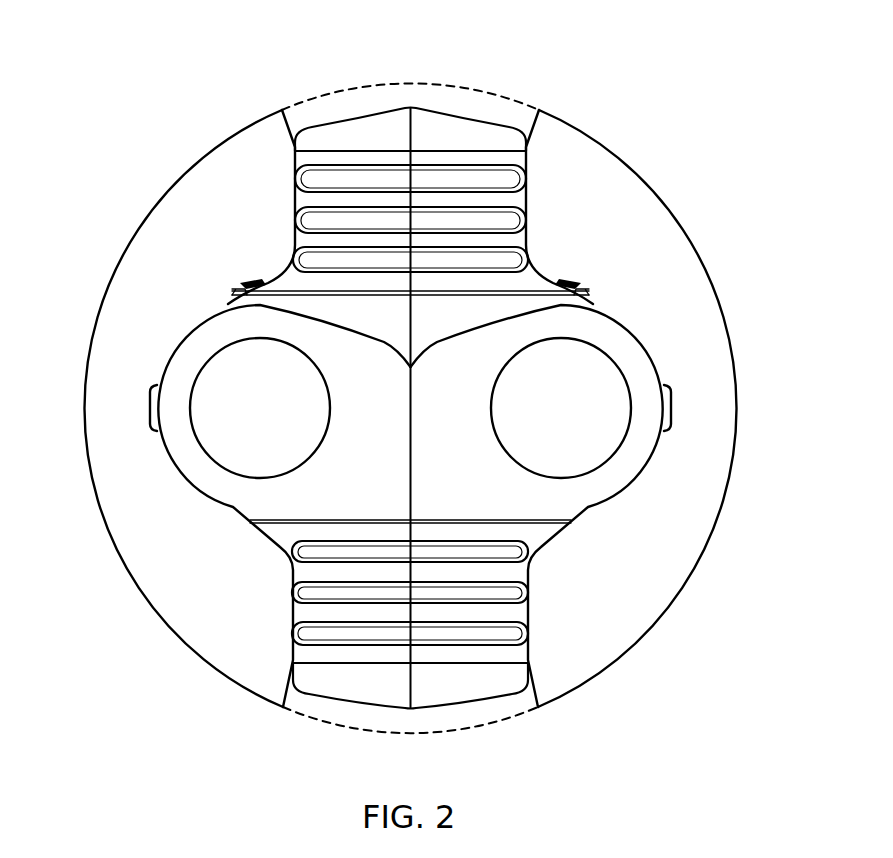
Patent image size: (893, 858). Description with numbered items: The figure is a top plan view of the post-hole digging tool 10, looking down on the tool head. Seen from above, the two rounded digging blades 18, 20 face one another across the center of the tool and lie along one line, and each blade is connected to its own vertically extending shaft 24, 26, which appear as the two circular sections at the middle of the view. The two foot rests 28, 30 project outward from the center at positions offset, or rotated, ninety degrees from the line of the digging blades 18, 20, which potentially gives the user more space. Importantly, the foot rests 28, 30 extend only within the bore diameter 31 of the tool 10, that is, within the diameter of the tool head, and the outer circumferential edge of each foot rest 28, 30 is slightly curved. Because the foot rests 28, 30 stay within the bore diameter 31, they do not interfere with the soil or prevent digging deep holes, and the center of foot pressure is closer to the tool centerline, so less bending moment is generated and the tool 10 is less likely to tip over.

The post-hole digging tool 10 is at (232, 69).
The digging blade 18 is at (106, 456).
The digging blade 20 is at (728, 405).
The shaft 24 is at (325, 392).
The shaft 26 is at (500, 392).
The foot rest 28 is at (318, 702).
The foot rest 30 is at (364, 101).
The bore diameter 31 is at (469, 87).